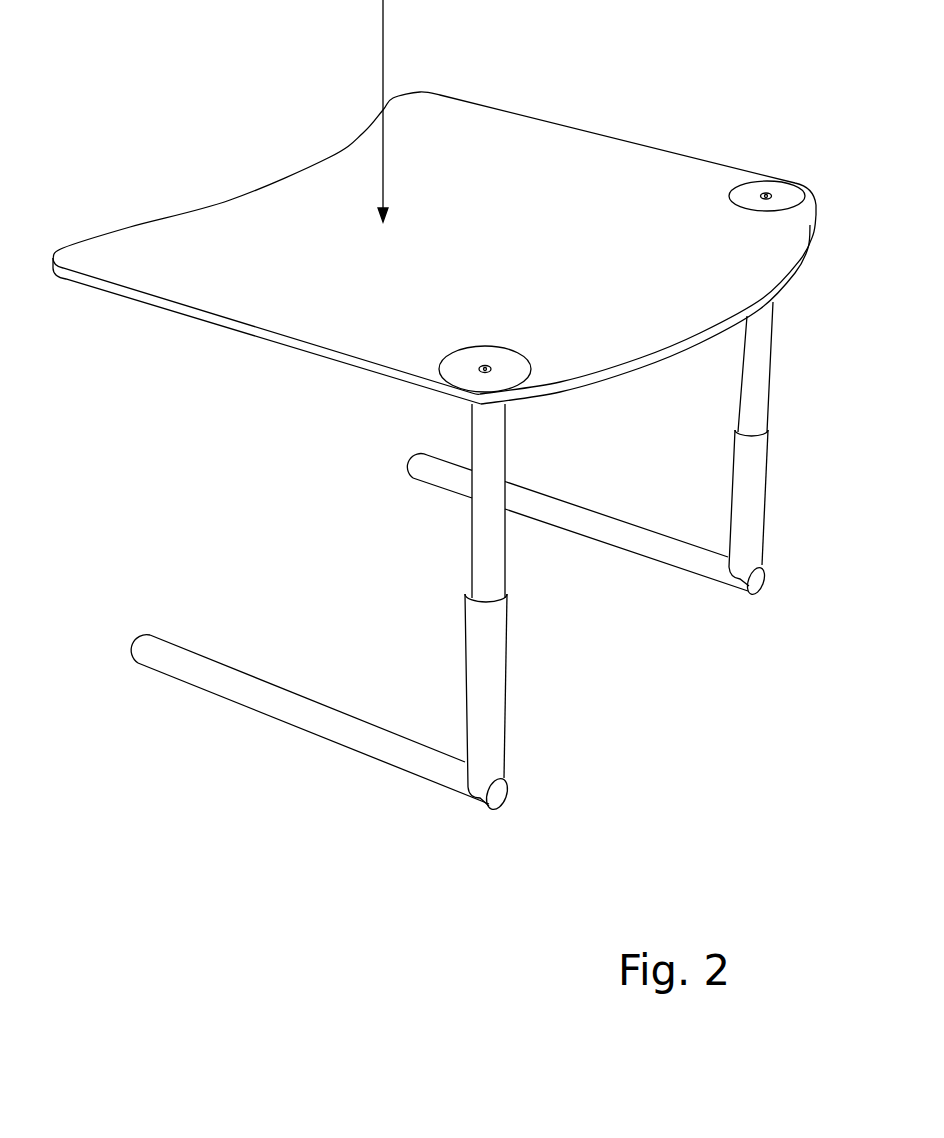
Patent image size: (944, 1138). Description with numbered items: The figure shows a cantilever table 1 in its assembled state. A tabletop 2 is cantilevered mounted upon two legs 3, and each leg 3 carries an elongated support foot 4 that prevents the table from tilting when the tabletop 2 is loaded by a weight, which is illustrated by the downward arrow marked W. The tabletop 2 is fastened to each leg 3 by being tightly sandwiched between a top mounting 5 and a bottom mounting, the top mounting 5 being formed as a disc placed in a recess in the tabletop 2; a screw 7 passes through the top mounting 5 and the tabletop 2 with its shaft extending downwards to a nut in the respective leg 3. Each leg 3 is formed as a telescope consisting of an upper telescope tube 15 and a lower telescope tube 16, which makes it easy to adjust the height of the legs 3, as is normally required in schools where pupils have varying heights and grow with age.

The cantilever table 1 is at (590, 112).
The tabletop 2 is at (456, 99).
The leg 3 is at (470, 533).
The support foot 4 is at (572, 507).
The top mounting 5 is at (515, 363).
The screw 7 is at (483, 366).
The upper telescope tube 15 is at (508, 435).
The lower telescope tube 16 is at (507, 690).